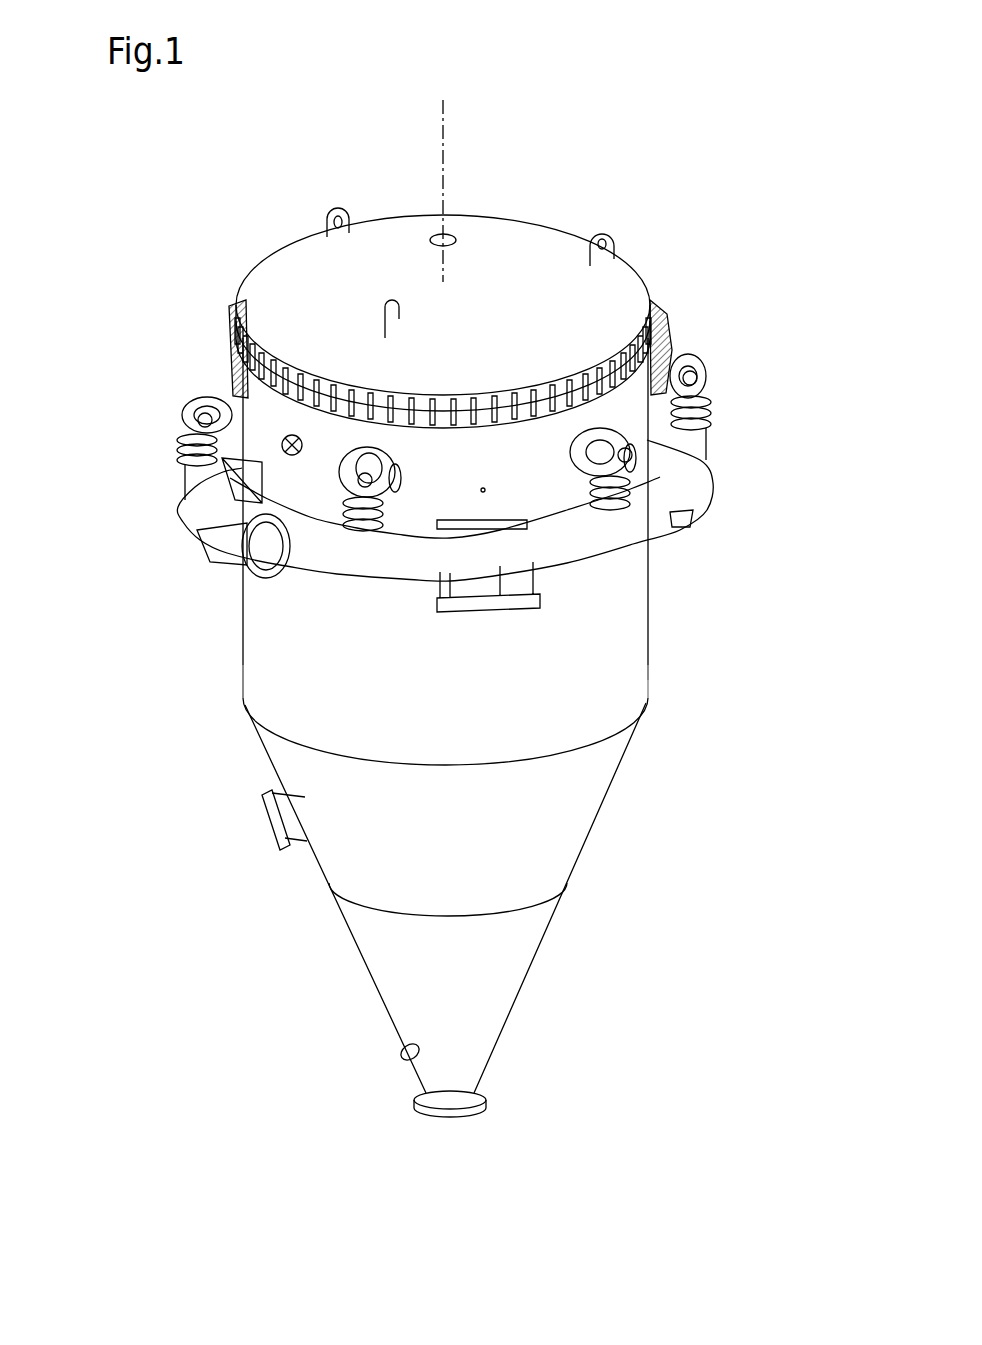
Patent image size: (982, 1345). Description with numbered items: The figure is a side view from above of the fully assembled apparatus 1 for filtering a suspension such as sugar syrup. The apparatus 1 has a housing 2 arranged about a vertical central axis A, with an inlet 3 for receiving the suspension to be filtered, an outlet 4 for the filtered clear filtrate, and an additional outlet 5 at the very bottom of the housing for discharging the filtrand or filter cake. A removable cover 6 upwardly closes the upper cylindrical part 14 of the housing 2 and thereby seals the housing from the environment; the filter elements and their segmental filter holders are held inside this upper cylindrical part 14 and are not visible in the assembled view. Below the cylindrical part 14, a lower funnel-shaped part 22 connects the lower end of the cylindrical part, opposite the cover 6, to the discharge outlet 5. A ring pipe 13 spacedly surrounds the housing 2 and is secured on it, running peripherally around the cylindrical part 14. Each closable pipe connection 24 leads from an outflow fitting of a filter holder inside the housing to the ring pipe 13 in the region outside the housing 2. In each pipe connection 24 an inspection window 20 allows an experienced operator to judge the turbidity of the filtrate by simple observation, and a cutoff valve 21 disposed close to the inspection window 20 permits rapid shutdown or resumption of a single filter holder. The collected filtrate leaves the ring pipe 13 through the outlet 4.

The apparatus 1 is at (213, 685).
The housing 2 is at (674, 698).
The inlet 3 is at (290, 812).
The outlet 4 is at (225, 553).
The outlet 5 is at (437, 1123).
The cover 6 is at (392, 252).
The ring pipe 13 is at (380, 560).
The upper cylindrical part 14 is at (633, 590).
The inspection window 20 is at (590, 400).
The cutoff valve 21 is at (352, 452).
The lower funnel-shaped part 22 is at (503, 979).
The pipe connection 24 is at (614, 418).
The vertical central axis A is at (443, 133).